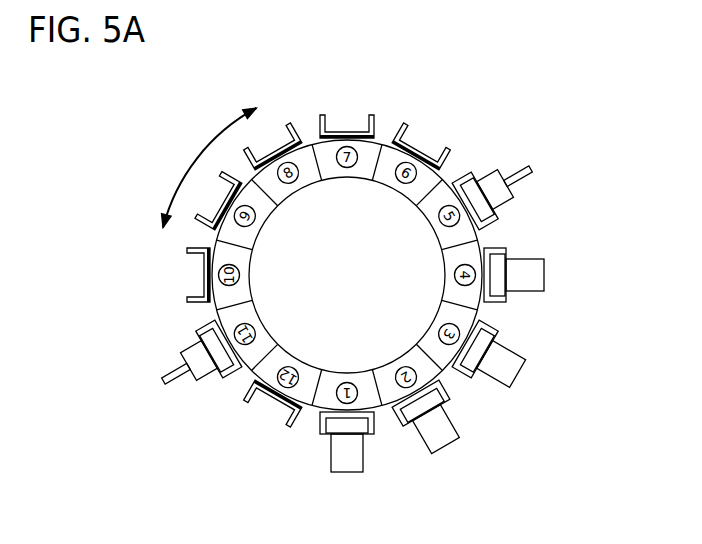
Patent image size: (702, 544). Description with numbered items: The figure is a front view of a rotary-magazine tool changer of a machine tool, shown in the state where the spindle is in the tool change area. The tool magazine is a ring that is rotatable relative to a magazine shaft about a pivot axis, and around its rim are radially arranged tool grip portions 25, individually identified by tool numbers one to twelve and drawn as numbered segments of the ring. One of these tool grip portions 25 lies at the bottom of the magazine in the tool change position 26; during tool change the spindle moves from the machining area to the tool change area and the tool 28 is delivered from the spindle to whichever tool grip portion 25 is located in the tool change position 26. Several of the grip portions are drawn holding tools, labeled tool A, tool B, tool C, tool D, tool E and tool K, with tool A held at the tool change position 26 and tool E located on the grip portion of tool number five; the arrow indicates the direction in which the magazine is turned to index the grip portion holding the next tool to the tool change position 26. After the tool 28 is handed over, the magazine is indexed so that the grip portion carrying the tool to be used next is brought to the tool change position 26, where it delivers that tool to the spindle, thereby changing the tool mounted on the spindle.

The tool grip portion 25 is at (271, 405).
The tool change position 26 is at (375, 468).
The tool 28 is at (328, 481).
The tool A is at (313, 475).
The station B is at (430, 431).
The station C is at (491, 372).
The station D is at (521, 286).
The tool E is at (498, 188).
The station K is at (196, 366).